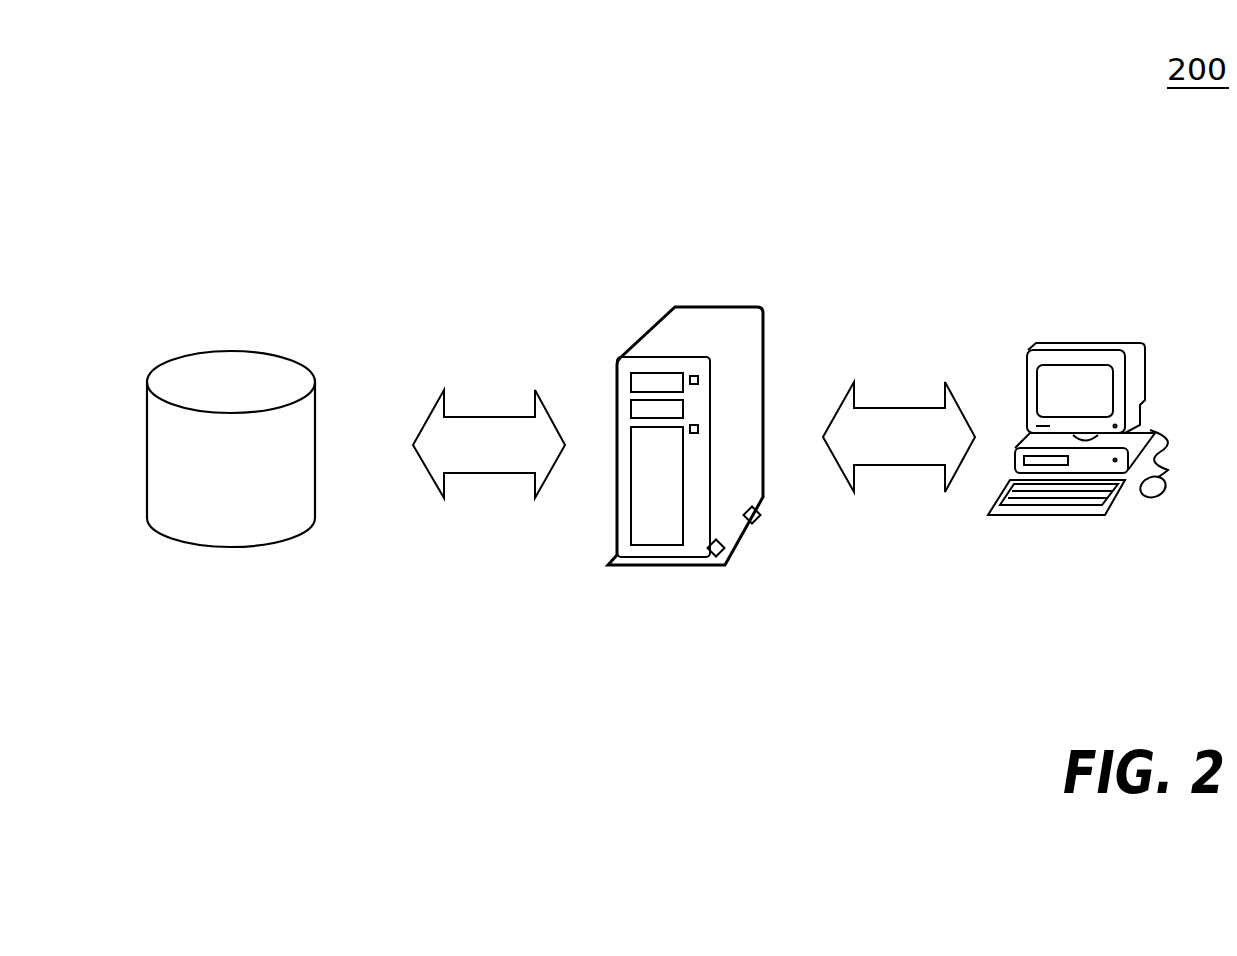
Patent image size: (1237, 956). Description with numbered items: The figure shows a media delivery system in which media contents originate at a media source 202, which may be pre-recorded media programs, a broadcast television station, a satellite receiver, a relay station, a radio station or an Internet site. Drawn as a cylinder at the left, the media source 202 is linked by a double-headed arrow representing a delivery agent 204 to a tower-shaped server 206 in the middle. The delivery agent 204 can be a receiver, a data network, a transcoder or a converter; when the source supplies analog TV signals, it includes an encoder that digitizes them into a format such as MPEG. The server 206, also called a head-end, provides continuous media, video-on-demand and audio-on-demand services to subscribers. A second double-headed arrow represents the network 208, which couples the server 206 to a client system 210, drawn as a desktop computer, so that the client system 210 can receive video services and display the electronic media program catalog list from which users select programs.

The media source 202 is at (255, 520).
The delivery agent 204 is at (478, 463).
The server 206 is at (687, 542).
The network 208 is at (875, 457).
The client system 210 is at (1132, 492).